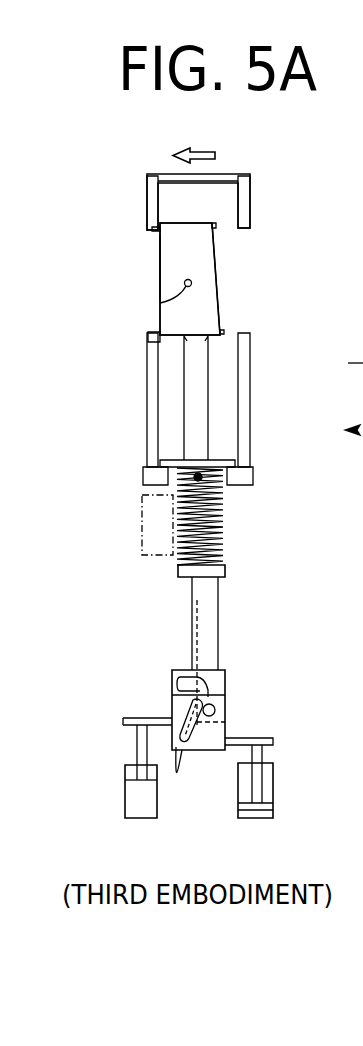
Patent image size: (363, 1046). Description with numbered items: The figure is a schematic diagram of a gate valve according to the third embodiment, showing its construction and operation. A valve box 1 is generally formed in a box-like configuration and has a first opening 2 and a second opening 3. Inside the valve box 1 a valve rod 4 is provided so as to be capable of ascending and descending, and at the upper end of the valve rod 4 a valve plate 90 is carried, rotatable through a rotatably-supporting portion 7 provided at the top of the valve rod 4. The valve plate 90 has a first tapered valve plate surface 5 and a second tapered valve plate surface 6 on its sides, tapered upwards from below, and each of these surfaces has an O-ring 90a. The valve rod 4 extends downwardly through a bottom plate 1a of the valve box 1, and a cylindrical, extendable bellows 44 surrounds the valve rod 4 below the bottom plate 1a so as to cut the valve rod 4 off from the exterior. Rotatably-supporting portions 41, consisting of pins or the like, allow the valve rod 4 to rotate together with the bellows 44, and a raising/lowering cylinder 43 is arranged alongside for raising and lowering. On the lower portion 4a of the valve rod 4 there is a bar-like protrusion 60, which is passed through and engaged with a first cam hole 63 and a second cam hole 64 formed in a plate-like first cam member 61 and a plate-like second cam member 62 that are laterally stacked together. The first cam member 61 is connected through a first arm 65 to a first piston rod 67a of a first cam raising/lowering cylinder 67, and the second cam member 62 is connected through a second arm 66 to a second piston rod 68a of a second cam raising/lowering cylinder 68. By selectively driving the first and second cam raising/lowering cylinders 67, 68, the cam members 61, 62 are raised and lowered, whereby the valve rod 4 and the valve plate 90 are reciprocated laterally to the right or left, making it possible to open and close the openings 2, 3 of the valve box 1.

The valve box 1 is at (250, 180).
The bottom plate 1a is at (223, 457).
The first opening 2 is at (150, 230).
The second opening 3 is at (250, 226).
The valve rod 4 is at (187, 405).
The lower portion of the valve rod 4a is at (210, 613).
The first tapered valve plate surface 5 is at (160, 255).
The second tapered valve plate surface 6 is at (220, 292).
The rotatably-supporting portion 7 is at (160, 303).
The rotatably-supporting portion 41 is at (210, 483).
The raising/lowering cylinder 43 is at (152, 522).
The bellows 44 is at (223, 538).
The bar-like protrusion 60 is at (224, 685).
The first cam member 61 is at (183, 673).
The second cam member 62 is at (216, 735).
The first cam hole 63 is at (187, 680).
The second cam hole 64 is at (176, 747).
The first arm 65 is at (150, 718).
The second arm 66 is at (273, 740).
The first cam raising/lowering cylinder 67 is at (263, 782).
The first piston rod 67a is at (133, 737).
The second cam raising/lowering cylinder 68 is at (132, 802).
The second piston rod 68a is at (250, 753).
The valve plate 90 is at (203, 304).
The O-ring 90a is at (215, 227).